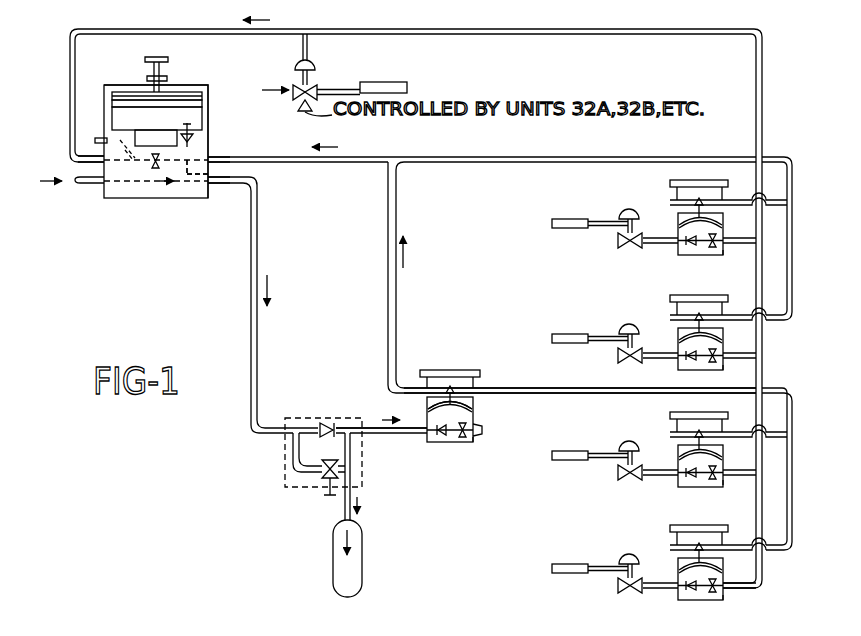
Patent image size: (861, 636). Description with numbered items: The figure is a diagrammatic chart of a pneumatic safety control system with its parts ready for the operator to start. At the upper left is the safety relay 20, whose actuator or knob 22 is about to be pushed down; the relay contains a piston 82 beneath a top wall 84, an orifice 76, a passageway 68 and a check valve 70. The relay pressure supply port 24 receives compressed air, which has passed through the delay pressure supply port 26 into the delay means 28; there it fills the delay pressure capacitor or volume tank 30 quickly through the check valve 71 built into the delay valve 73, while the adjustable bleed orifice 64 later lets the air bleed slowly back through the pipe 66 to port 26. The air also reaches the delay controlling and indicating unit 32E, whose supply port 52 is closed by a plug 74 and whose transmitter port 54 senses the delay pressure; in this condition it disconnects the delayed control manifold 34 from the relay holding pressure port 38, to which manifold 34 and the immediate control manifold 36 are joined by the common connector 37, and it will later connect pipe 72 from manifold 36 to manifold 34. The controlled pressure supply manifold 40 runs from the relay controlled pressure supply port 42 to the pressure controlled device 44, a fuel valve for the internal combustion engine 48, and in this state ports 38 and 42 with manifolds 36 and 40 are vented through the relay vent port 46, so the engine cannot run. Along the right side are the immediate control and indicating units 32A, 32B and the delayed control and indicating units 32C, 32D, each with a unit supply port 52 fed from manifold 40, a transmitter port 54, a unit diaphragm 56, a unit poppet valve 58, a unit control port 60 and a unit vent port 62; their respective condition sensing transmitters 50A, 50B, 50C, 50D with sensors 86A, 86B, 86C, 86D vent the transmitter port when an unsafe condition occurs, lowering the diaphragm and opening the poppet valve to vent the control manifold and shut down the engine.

The safety relay 20 is at (127, 215).
The actuator or knob 22 is at (167, 60).
The relay pressure supply port 24 is at (100, 188).
The delay pressure supply port 26 is at (210, 185).
The delay means 28 is at (250, 481).
The delay pressure capacitor or volume tank 30 is at (365, 556).
The control and indicating unit 32A is at (668, 183).
The control and indicating unit 32B is at (668, 296).
The delayed control and indicating unit 32C is at (668, 422).
The delayed control and indicating unit 32D is at (668, 517).
The delay controlling and indicating unit 32E is at (427, 350).
The delayed control manifold 34 is at (510, 389).
The immediate control manifold 36 is at (532, 159).
The common connector 37 is at (358, 159).
The relay holding pressure port 38 is at (210, 158).
The controlled pressure supply manifold 40 is at (452, 35).
The relay controlled pressure supply port 42 is at (100, 156).
The pressure controlled device 44 is at (333, 74).
The relay vent port 46 is at (110, 140).
The internal combustion engine 48 is at (412, 78).
The condition sensing transmitter 50A is at (556, 238).
The condition sensing transmitter 50B is at (570, 325).
The condition sensing transmitter 50C is at (577, 446).
The condition sensing transmitter 50D is at (573, 560).
The unit supply port 52 is at (478, 440).
The transmitter port 54 is at (410, 437).
The unit diaphragm 56 is at (432, 412).
The unit poppet valve 58 is at (700, 198).
The unit control port 60 is at (735, 203).
The unit vent port 62 is at (677, 200).
The adjustable bleed orifice 64 is at (328, 477).
The pipe 66 is at (250, 306).
The passageway 68 is at (195, 157).
The check valve 70 is at (188, 153).
The check valve 71 is at (328, 418).
The pipe 72 is at (388, 268).
The delay valve 73 is at (365, 475).
The plug 74 is at (480, 425).
The orifice 76 is at (157, 172).
The piston 82 is at (125, 100).
The top wall 84 is at (200, 84).
The sensor 86A is at (570, 219).
The sensor 86B is at (584, 343).
The sensor 86C is at (584, 460).
The sensor 86D is at (584, 573).